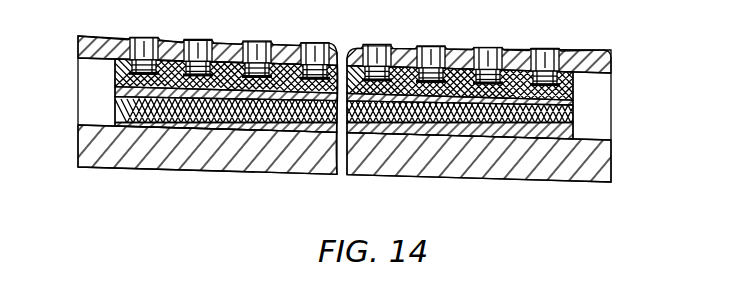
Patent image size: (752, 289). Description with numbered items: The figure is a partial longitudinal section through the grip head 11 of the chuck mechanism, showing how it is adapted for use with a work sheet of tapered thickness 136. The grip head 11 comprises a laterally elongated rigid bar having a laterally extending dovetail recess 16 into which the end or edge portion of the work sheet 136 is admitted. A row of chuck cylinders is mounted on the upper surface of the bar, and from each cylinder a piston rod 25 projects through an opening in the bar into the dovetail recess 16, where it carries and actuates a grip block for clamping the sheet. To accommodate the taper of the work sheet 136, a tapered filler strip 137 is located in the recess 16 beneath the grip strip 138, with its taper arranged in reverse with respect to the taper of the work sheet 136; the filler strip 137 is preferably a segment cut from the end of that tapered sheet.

The grip head 11 is at (602, 65).
The dovetail recess 16 is at (115, 76).
The piston rod 25 is at (489, 54).
The work sheet of tapered thickness 136 is at (106, 97).
The tapered filler strip 137 is at (563, 135).
The grip strip 138 is at (563, 117).